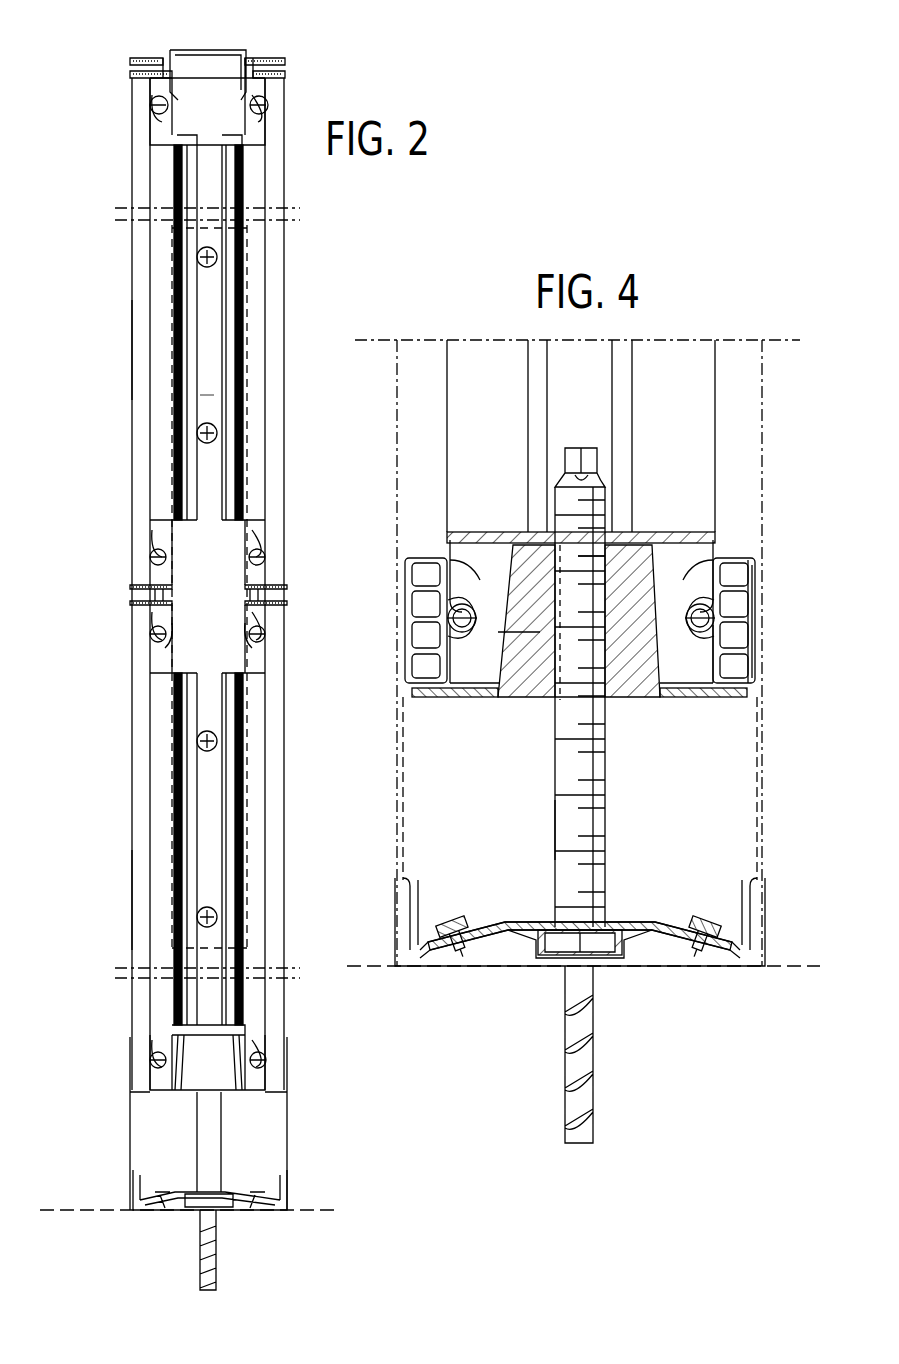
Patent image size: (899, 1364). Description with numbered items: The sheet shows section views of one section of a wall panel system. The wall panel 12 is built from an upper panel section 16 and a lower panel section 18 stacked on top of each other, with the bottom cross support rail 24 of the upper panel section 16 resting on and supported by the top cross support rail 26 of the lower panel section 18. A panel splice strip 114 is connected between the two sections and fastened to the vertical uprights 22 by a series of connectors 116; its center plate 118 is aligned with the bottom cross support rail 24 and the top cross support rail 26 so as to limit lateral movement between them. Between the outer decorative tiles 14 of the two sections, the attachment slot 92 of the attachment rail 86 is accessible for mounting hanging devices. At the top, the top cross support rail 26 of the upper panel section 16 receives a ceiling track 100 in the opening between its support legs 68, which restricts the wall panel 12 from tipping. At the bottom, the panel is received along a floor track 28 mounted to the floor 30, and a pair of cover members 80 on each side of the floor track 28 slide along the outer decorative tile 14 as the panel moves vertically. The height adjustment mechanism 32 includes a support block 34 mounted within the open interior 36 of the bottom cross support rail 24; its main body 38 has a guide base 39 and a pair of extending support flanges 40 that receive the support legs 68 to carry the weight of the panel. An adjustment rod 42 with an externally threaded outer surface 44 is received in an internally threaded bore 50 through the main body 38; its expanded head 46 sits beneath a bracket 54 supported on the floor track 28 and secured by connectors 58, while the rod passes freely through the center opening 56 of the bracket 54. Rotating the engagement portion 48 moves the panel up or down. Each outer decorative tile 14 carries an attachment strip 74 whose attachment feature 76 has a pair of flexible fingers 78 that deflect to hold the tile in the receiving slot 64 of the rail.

In FIG. 2, the wall panel 12 is at (302, 298).
In FIG. 2, the outer decorative tile 14 is at (278, 348).
In FIG. 4, the outer decorative tile 14 is at (412, 435).
In FIG. 2, the upper panel section 16 is at (118, 343).
In FIG. 2, the lower panel section 18 is at (125, 876).
In FIG. 2, the vertical upright 22 is at (262, 402).
In FIG. 2, the bottom cross support rail 24 is at (152, 540).
In FIG. 4, the bottom cross support rail 24 is at (493, 530).
In FIG. 2, the top cross support rail 26 is at (152, 133).
In FIG. 2, the floor track 28 is at (138, 1212).
In FIG. 4, the floor track 28 is at (418, 968).
In FIG. 2, the floor 30 is at (322, 1210).
In FIG. 4, the floor 30 is at (788, 966).
In FIG. 2, the height adjustment mechanism 32 is at (260, 1125).
In FIG. 4, the height adjustment mechanism 32 is at (738, 802).
In FIG. 4, the support block 34 is at (650, 580).
In FIG. 4, the open interior 36 is at (700, 602).
In FIG. 4, the main body 38 is at (522, 572).
In FIG. 4, the guide base 39 is at (540, 692).
In FIG. 4, the support flange 40 is at (447, 690).
In FIG. 4, the adjustment rod 42 is at (607, 828).
In FIG. 4, the externally threaded outer surface 44 is at (555, 826).
In FIG. 4, the expanded head 46 is at (560, 948).
In FIG. 4, the engagement portion 48 is at (597, 462).
In FIG. 4, the internally threaded bore 50 is at (600, 552).
In FIG. 4, the bracket 54 is at (606, 920).
In FIG. 4, the center opening 56 is at (540, 925).
In FIG. 4, the connector 58 is at (458, 922).
In FIG. 2, the receiving slot 64 is at (247, 640).
In FIG. 4, the receiving slot 64 is at (688, 585).
In FIG. 2, the support leg 68 is at (165, 60).
In FIG. 4, the support leg 68 is at (483, 688).
In FIG. 4, the attachment strip 74 is at (748, 618).
In FIG. 2, the attachment feature 76 is at (155, 636).
In FIG. 4, the attachment feature 76 is at (708, 620).
In FIG. 4, the flexible finger 78 is at (710, 596).
In FIG. 2, the cover member 80 is at (130, 1150).
In FIG. 2, the attachment rail 86 is at (272, 587).
In FIG. 2, the attachment slot 92 is at (280, 598).
In FIG. 2, the ceiling track 100 is at (208, 55).
In FIG. 2, the panel splice strip 114 is at (208, 402).
In FIG. 2, the connector 116 is at (200, 252).
In FIG. 2, the center plate 118 is at (180, 540).